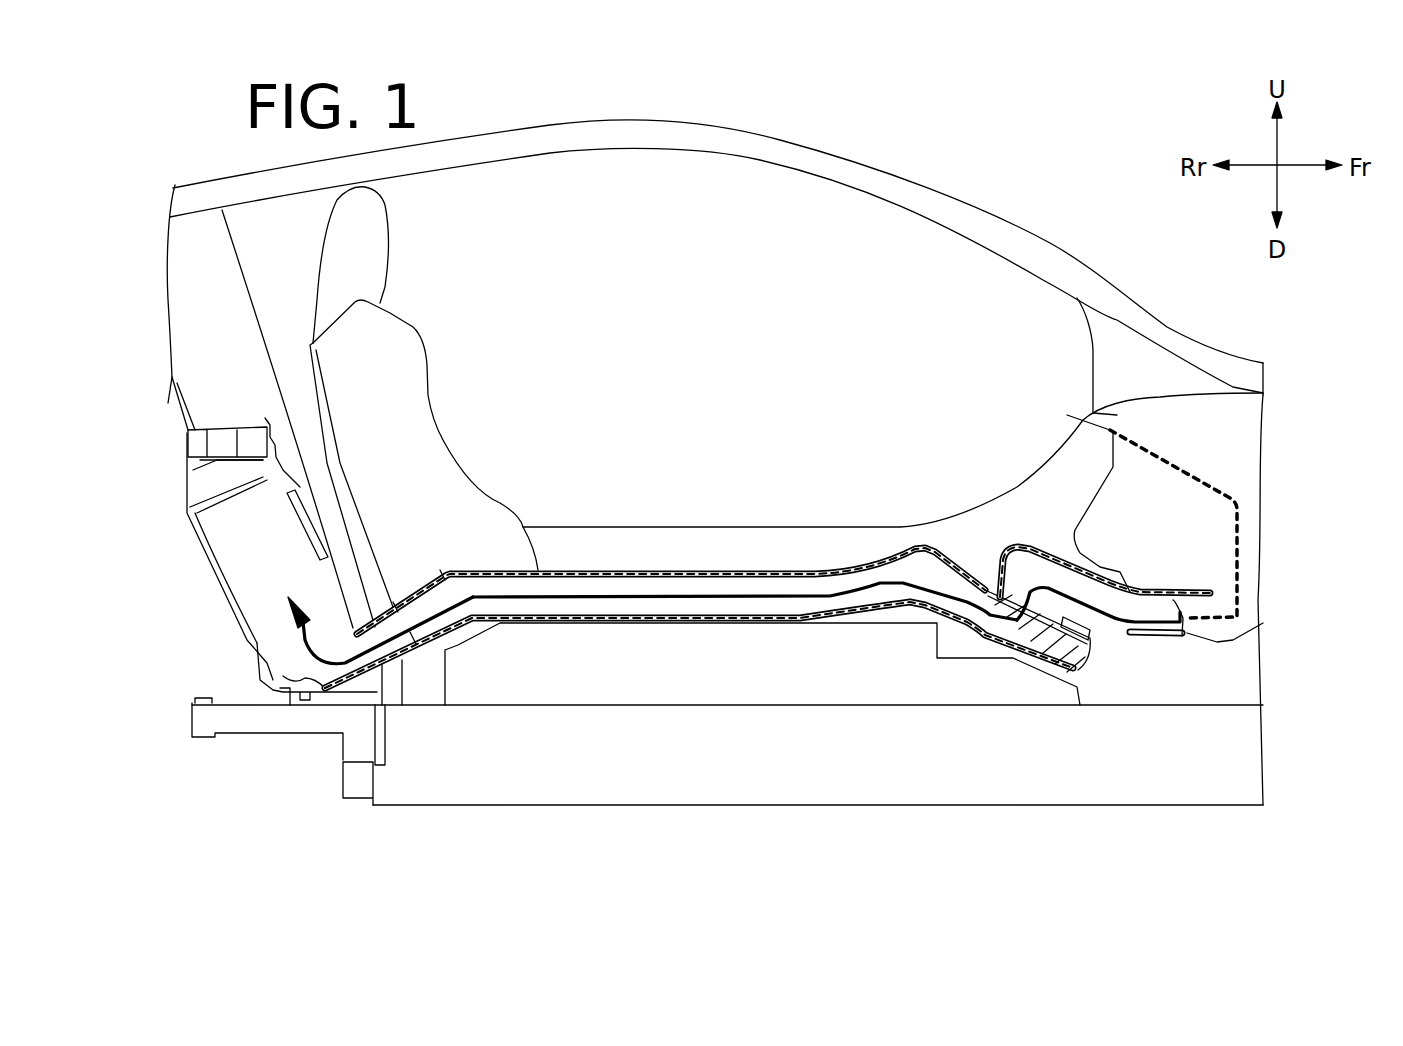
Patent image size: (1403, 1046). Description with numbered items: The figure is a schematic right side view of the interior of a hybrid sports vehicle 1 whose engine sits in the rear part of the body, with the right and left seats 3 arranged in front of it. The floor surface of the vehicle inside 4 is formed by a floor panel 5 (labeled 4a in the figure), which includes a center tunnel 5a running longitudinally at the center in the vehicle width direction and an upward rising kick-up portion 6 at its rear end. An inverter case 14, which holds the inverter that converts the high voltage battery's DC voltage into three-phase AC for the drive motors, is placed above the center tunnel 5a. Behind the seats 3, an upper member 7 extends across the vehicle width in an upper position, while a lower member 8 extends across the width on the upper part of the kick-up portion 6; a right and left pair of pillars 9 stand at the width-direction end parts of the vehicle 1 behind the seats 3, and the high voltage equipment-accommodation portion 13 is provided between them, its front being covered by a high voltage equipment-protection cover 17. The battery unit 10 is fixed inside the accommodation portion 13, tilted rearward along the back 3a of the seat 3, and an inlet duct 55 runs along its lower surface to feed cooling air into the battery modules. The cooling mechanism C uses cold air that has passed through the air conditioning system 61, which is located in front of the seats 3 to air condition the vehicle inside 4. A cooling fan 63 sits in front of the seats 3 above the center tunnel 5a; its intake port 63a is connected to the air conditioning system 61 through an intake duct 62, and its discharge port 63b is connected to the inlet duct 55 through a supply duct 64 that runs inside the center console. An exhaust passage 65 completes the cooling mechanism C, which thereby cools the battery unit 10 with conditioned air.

The vehicle 1 is at (1032, 190).
The seat 3 is at (430, 407).
The back 3a is at (397, 367).
The vehicle inside 4 is at (840, 258).
The floor panel 4a is at (700, 785).
The floor panel 5 is at (727, 792).
The center tunnel 5a is at (625, 743).
The kick-up portion 6 is at (390, 780).
The upper member 7 is at (182, 447).
The lower member 8 is at (250, 683).
The pillar 9 is at (210, 265).
The battery unit 10 is at (247, 537).
The high voltage equipment-accommodation portion 13 is at (217, 577).
The inverter case 14 is at (737, 657).
The high voltage equipment-protection cover 17 is at (390, 738).
The inlet duct 55 is at (440, 617).
The air conditioning system 61 is at (1128, 407).
The intake duct 62 is at (1147, 637).
The cooling fan 63 is at (1053, 640).
The intake port 63a is at (1023, 600).
The discharge port 63b is at (968, 613).
The supply duct 64 is at (650, 570).
The exhaust passage 65 is at (385, 740).
The cooling mechanism C is at (927, 540).